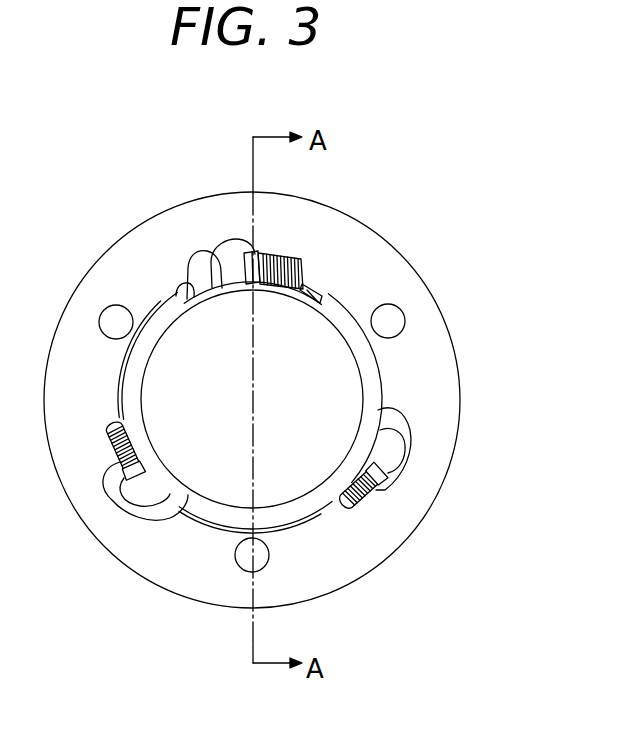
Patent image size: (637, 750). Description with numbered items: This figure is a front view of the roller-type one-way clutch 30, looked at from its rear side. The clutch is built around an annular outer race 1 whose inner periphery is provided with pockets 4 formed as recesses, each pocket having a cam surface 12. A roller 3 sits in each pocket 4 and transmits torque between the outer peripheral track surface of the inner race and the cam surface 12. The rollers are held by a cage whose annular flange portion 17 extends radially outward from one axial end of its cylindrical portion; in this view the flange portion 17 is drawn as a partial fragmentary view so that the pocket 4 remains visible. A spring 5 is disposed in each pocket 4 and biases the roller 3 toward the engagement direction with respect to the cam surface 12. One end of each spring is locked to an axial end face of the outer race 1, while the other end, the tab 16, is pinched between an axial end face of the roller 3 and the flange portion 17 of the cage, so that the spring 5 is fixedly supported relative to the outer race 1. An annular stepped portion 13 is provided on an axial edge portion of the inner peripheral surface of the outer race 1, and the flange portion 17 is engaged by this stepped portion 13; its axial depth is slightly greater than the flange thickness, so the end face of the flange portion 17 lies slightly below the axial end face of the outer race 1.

The outer race 1 is at (445, 328).
The roller 3 is at (228, 272).
The pocket 4 is at (202, 252).
The spring 5 is at (281, 257).
The cam surface 12 is at (193, 252).
The stepped portion 13 is at (185, 287).
The tab 16 is at (261, 288).
The flange portion 17 is at (198, 513).
The one-way clutch 30 is at (277, 397).